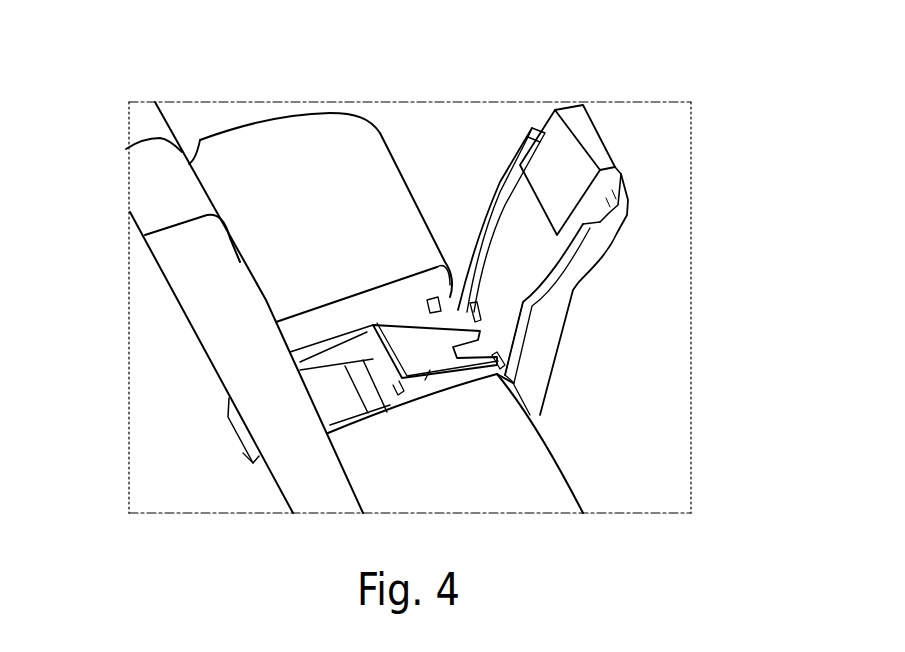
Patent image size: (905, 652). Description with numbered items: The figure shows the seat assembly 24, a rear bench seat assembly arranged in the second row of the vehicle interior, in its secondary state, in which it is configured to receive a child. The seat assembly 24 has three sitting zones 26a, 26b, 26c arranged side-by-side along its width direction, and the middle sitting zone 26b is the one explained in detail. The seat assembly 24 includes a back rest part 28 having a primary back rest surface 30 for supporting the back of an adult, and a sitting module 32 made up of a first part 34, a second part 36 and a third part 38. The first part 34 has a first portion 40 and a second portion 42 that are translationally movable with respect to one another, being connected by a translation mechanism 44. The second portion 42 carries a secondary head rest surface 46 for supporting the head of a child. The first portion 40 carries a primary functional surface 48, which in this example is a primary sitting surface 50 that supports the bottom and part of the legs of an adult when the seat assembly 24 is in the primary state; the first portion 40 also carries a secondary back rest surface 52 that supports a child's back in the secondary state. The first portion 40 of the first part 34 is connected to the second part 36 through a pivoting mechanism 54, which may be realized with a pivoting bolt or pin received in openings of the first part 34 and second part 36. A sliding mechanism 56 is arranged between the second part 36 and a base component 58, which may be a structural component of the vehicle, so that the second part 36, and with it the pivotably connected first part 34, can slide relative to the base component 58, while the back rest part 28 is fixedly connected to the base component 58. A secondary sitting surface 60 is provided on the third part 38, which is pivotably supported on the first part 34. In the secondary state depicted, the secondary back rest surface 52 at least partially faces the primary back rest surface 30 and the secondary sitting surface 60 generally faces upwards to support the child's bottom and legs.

The seat assembly 24 is at (703, 90).
The sitting zone 26a is at (232, 153).
The sitting zone 26b is at (293, 307).
The sitting zone 26c is at (470, 463).
The back rest part 28 is at (150, 172).
The primary back rest surface 30 is at (214, 209).
The sitting module 32 is at (556, 395).
The first part 34 is at (643, 244).
The second part 36 is at (338, 407).
The third part 38 is at (430, 372).
The first portion 40 is at (552, 321).
The second portion 42 is at (620, 177).
The translation mechanism 44 is at (531, 211).
The secondary head rest surface 46 is at (558, 192).
The primary functional surface 48 is at (580, 288).
The primary sitting surface 50 is at (661, 294).
The secondary back rest surface 52 is at (510, 292).
The pivoting mechanism 54 is at (440, 272).
The sliding mechanism 56 is at (350, 349).
The base component 58 is at (457, 265).
The secondary sitting surface 60 is at (413, 345).